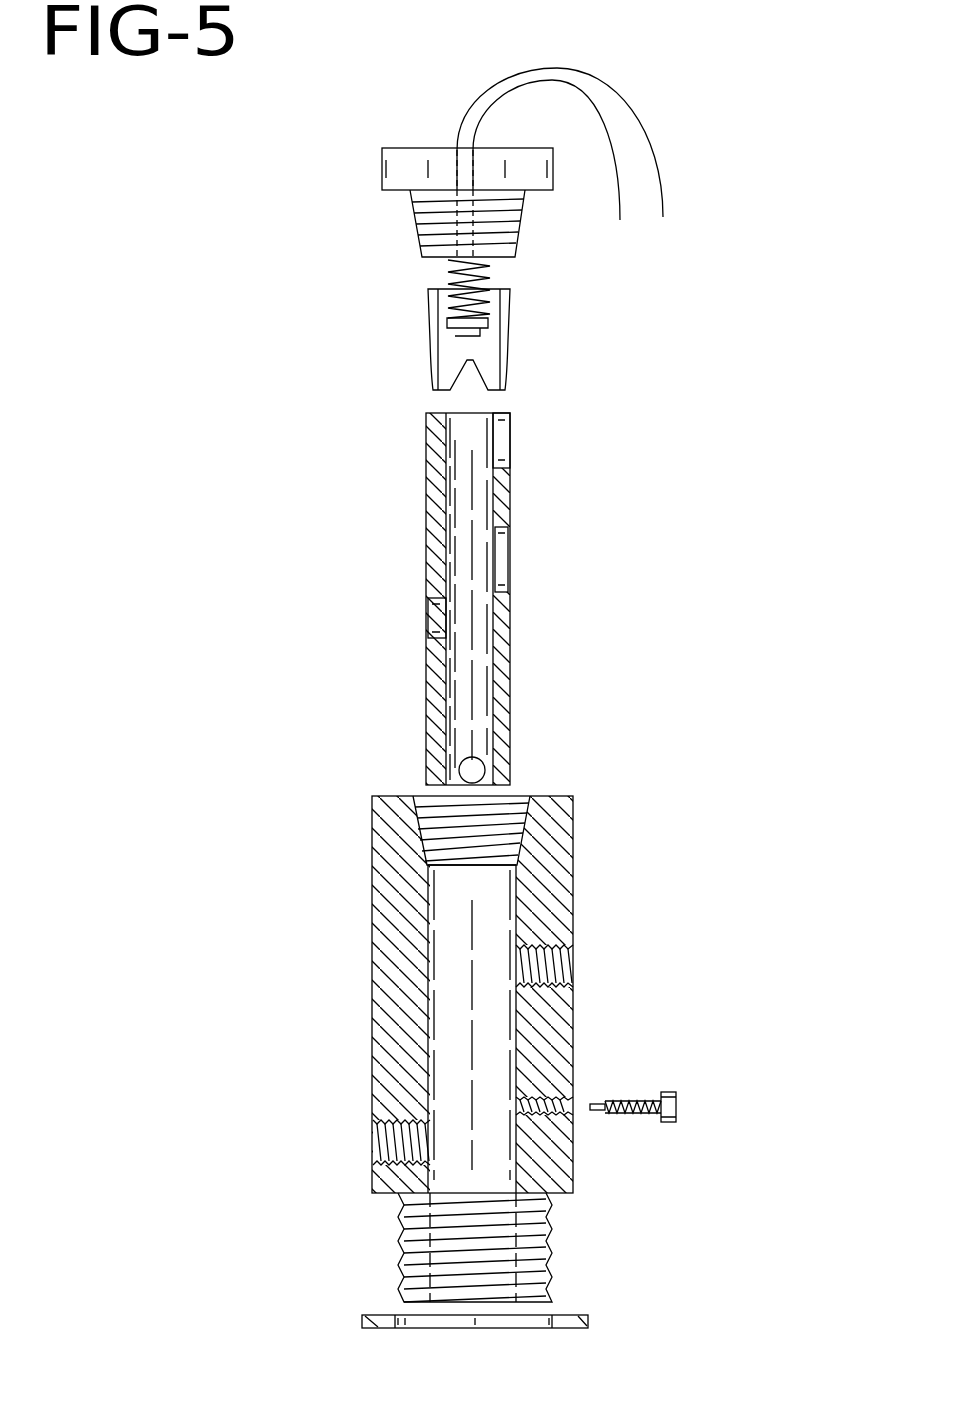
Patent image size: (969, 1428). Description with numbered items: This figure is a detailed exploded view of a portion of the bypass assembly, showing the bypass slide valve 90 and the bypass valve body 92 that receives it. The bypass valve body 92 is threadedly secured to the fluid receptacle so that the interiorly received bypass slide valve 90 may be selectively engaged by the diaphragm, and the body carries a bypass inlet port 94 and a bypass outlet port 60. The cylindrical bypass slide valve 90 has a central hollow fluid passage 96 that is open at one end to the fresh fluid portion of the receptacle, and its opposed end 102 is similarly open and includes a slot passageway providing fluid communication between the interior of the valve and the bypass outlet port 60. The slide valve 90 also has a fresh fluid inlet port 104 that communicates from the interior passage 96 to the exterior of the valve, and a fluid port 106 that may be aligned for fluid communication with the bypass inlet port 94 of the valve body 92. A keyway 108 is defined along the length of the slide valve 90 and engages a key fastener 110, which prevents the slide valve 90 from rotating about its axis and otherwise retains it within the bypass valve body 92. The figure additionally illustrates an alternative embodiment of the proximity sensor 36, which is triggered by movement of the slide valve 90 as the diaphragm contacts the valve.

The proximity sensor 36 is at (372, 215).
The bypass slide valve 90 is at (476, 599).
The central hollow fluid passage 96 is at (470, 715).
The opposed end 102 is at (510, 435).
The keyway 108 is at (510, 563).
The fluid port 106 is at (426, 618).
The fresh fluid inlet port 104 is at (472, 770).
The bypass inlet port 94 is at (467, 1062).
The bypass valve body 92 is at (547, 828).
The bypass outlet port 60 is at (573, 965).
The key fastener 110 is at (676, 1107).